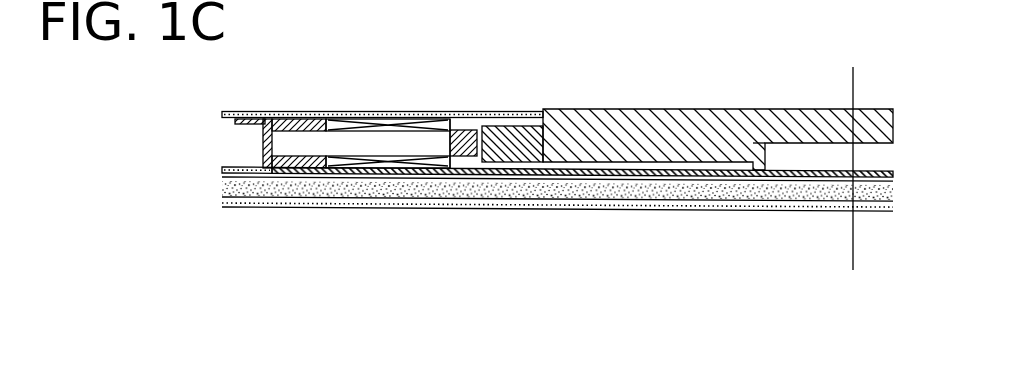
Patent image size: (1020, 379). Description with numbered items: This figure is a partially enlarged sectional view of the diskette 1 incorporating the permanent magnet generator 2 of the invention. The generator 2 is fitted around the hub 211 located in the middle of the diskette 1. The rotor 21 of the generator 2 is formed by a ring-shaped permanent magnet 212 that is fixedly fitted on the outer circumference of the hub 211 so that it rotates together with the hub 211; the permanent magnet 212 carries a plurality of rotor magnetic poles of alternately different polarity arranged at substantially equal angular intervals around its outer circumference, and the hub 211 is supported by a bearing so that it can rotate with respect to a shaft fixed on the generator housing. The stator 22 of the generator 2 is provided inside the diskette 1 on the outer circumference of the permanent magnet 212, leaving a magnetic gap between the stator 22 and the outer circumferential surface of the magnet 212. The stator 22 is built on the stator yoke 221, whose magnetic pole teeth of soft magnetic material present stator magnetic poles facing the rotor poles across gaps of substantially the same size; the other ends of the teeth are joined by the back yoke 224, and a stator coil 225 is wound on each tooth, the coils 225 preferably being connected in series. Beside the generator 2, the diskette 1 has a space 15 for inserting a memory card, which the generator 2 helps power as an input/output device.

The diskette 1 is at (557, 248).
The permanent magnet generator 2 is at (360, 113).
The space for inserting a memory card 15 is at (702, 187).
The rotor 21 is at (507, 168).
The stator 22 is at (367, 164).
The hub 211 is at (665, 138).
The ring-shaped permanent magnet 212 is at (512, 132).
The stator yoke 221 is at (387, 148).
The back yoke 224 is at (300, 166).
The stator coil 225 is at (433, 170).